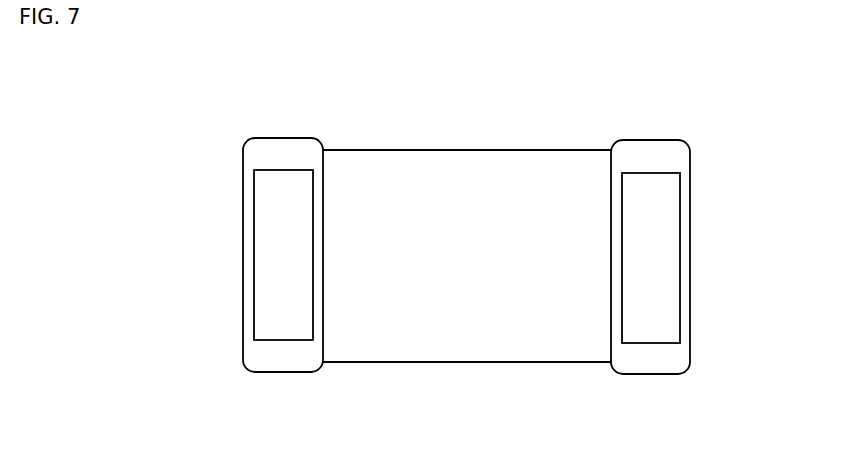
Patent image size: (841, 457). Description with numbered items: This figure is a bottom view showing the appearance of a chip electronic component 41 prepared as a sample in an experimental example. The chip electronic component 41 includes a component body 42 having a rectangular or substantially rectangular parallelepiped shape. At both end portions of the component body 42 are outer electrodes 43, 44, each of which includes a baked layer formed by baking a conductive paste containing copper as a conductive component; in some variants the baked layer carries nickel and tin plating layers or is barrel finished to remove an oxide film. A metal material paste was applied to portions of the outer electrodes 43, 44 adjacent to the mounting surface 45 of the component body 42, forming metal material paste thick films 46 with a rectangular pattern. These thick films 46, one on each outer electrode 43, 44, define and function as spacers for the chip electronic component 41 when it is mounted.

The chip electronic component 41 is at (508, 100).
The component body 42 is at (415, 143).
The outer electrode 43 is at (278, 145).
The outer electrode 44 is at (644, 148).
The mounting surface 45 is at (461, 345).
The metal material paste thick film 46 is at (260, 243).